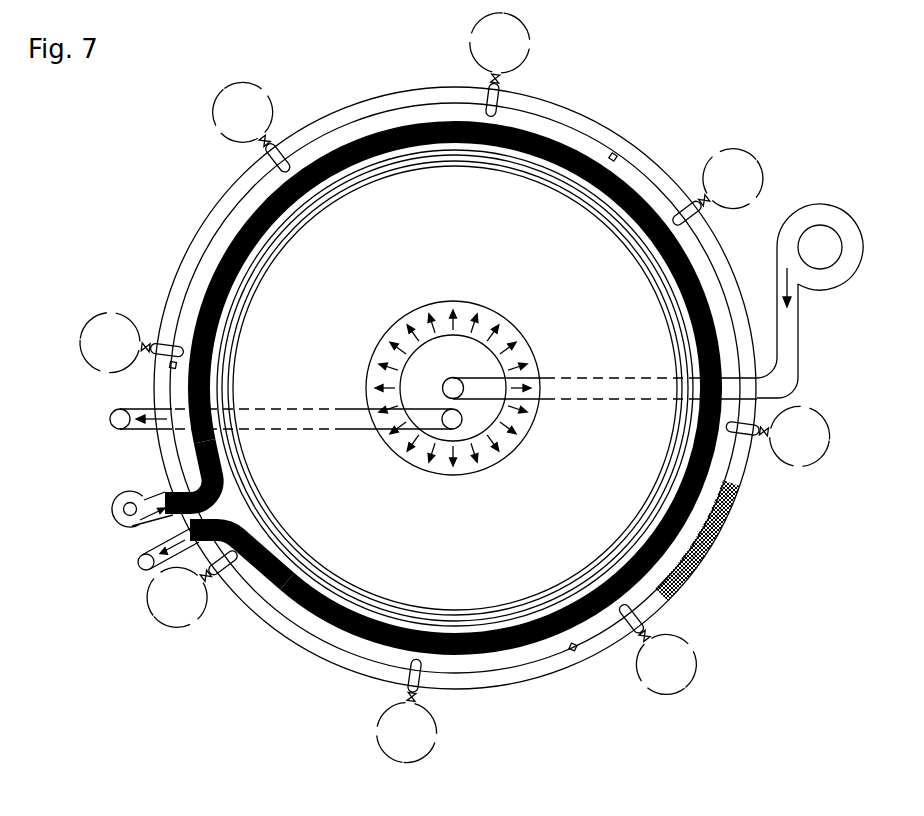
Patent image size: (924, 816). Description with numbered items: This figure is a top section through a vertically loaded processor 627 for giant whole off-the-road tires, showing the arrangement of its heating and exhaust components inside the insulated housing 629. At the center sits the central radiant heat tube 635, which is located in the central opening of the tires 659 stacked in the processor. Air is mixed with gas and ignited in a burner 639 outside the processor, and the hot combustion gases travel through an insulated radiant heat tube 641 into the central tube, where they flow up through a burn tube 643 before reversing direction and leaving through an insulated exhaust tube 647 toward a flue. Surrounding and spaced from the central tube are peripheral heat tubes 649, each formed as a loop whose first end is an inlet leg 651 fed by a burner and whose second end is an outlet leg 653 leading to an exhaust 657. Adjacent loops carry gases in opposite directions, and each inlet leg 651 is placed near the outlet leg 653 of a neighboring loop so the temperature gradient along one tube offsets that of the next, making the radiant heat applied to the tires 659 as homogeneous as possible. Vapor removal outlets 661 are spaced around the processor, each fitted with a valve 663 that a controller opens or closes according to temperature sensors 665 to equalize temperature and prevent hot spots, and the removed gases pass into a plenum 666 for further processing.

The processor 627 is at (640, 68).
The insulated housing 629 is at (723, 517).
The central radiant heat tube 635 is at (463, 334).
The burner 639 is at (851, 278).
The insulated radiant heat tube 641 is at (568, 379).
The burn tube 643 is at (457, 392).
The insulated exhaust tube 647 is at (272, 410).
The peripheral heat tubes 649 is at (697, 567).
The inlet leg 651 is at (193, 455).
The outlet leg 653 is at (353, 624).
The exhaust 657 is at (139, 569).
The tires 659 is at (449, 476).
The vapor removal outlets 661 is at (170, 293).
The valves 663 is at (638, 637).
The temperature sensors 665 is at (615, 155).
The plenum 666 is at (244, 83).